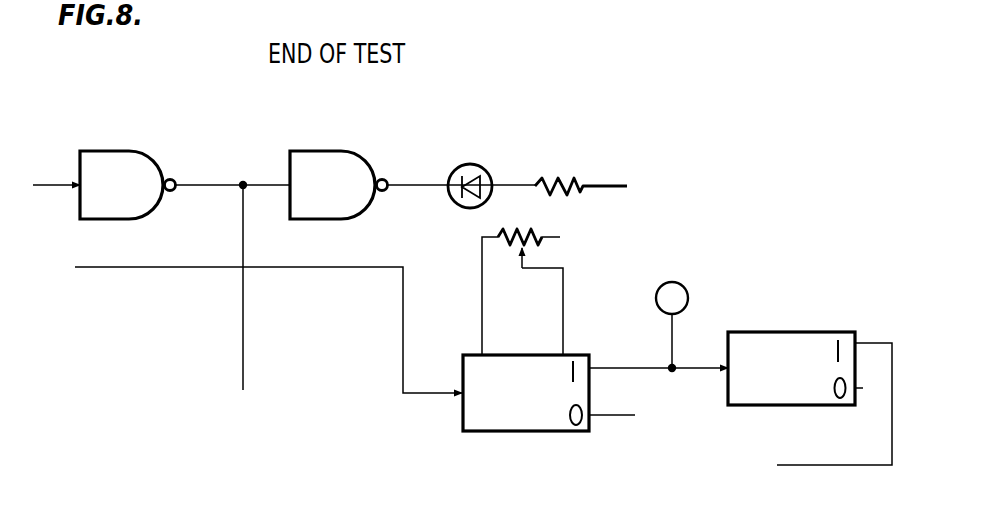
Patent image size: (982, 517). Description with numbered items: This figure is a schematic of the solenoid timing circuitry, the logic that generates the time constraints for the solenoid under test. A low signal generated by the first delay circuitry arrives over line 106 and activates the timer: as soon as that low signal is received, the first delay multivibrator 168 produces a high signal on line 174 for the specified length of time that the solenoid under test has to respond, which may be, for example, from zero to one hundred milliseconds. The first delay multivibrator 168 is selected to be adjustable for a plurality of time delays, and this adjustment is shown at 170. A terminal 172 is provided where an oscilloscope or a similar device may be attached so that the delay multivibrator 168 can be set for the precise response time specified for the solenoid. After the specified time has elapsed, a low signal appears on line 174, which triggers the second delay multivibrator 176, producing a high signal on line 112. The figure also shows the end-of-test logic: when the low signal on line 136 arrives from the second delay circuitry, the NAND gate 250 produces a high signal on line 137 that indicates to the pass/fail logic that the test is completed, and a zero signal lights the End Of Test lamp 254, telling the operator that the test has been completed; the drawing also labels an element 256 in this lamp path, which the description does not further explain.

The line 136 is at (52, 185).
The NAND gate 250 is at (158, 166).
The line 106 is at (268, 311).
The line 137 is at (243, 351).
The End Of Test lamp 254 is at (378, 147).
The light emitting diode indicator 256 is at (463, 165).
The adjustment 170 is at (527, 249).
The first delay multivibrator 168 is at (552, 432).
The line 174 is at (625, 366).
The terminal 172 is at (692, 275).
The second delay multivibrator 176 is at (765, 407).
The line 112 is at (875, 343).